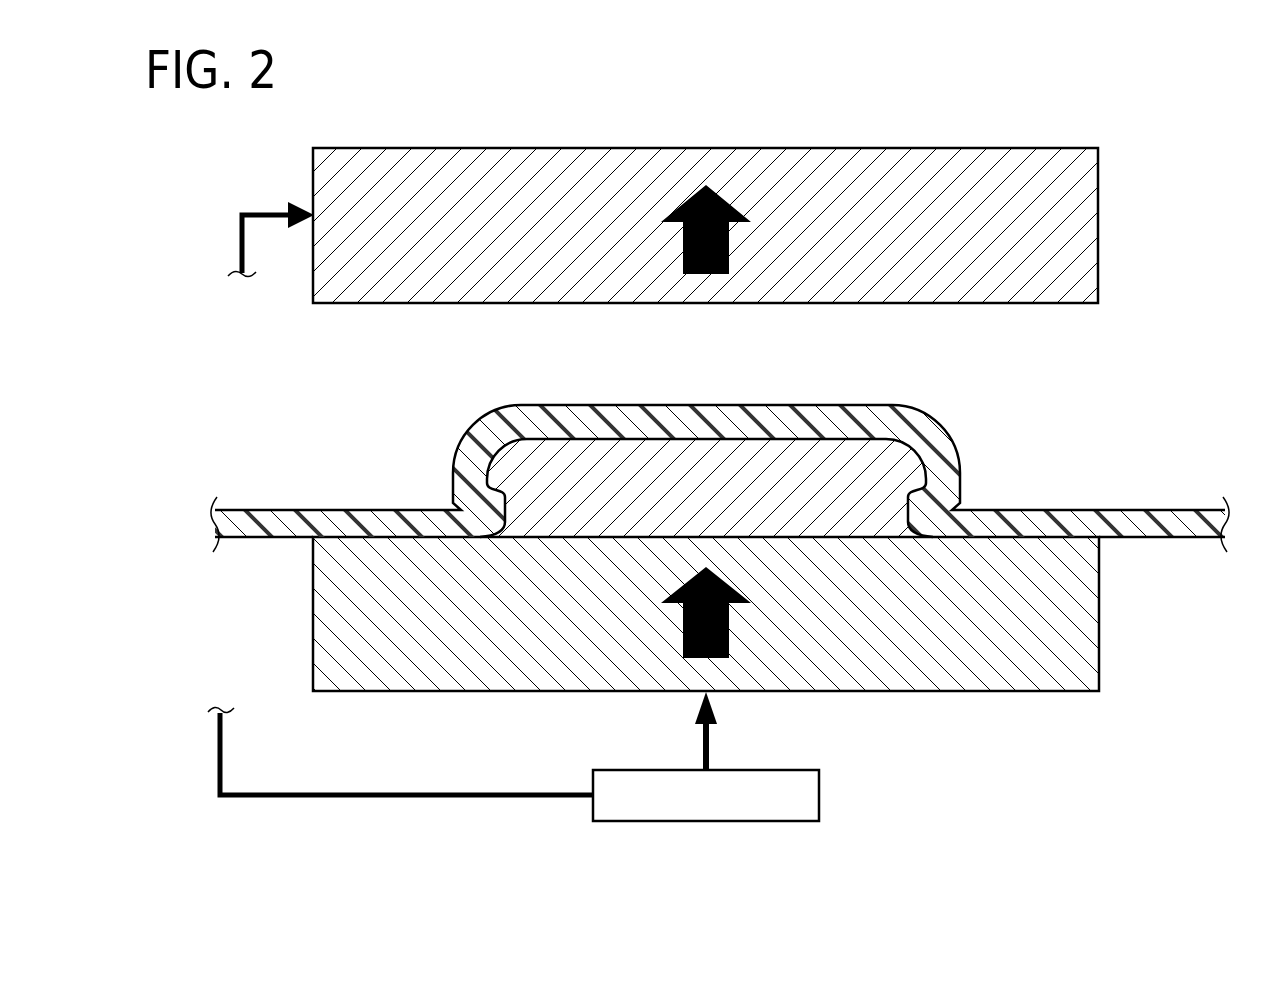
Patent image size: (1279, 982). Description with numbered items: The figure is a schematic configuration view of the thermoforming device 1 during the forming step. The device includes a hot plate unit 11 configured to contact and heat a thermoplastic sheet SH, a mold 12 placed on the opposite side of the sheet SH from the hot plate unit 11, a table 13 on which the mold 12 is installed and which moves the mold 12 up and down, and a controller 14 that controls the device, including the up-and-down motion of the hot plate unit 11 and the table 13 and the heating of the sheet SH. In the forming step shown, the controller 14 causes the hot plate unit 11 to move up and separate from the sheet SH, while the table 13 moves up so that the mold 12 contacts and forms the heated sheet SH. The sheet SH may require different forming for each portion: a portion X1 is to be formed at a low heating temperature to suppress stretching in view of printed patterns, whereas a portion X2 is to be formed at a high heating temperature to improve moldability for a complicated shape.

The thermoforming device 1 is at (1140, 138).
The hot plate unit 11 is at (1081, 240).
The mold 12 is at (515, 470).
The table 13 is at (1080, 594).
The controller 14 is at (818, 792).
The thermoplastic sheet SH is at (932, 438).
The portion formed at a low heating temperature X1 is at (457, 392).
The portion formed at a high heating temperature X2 is at (437, 407).